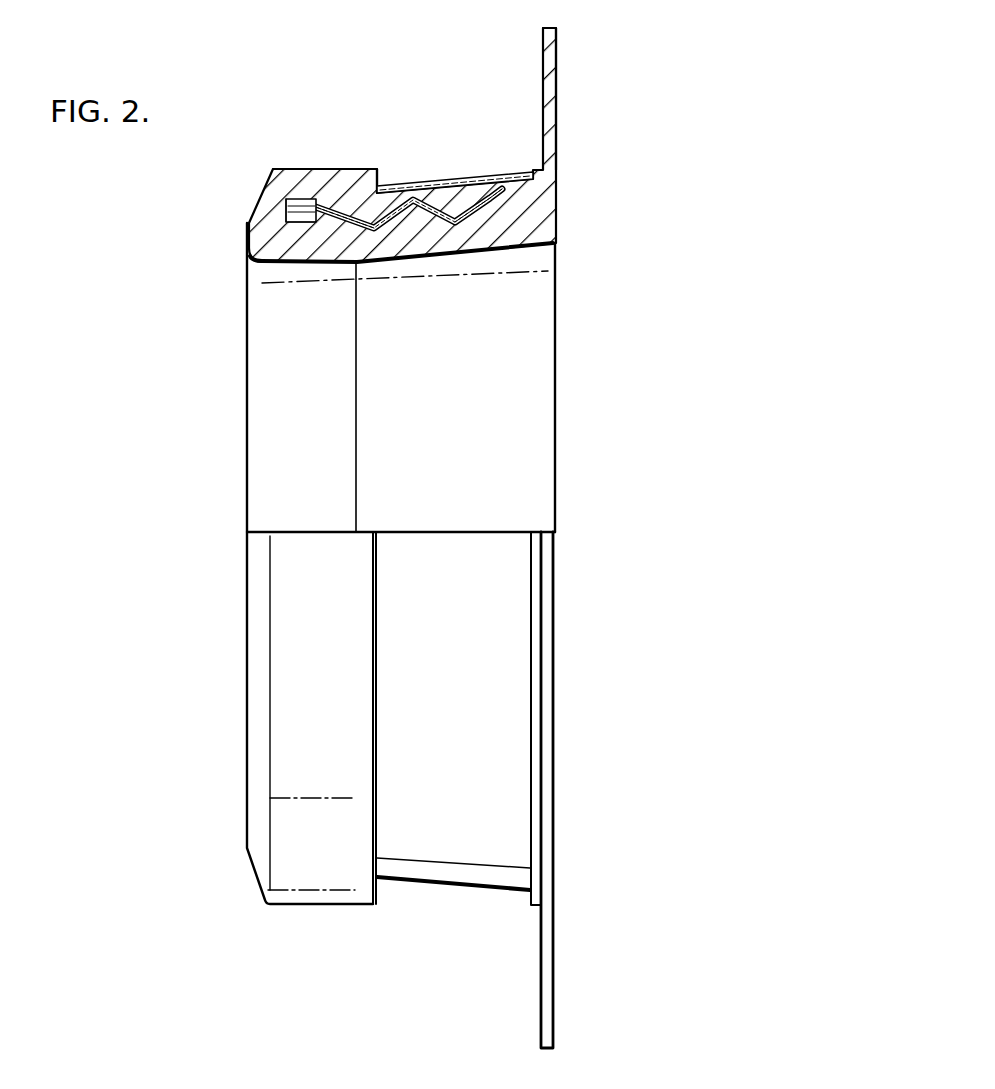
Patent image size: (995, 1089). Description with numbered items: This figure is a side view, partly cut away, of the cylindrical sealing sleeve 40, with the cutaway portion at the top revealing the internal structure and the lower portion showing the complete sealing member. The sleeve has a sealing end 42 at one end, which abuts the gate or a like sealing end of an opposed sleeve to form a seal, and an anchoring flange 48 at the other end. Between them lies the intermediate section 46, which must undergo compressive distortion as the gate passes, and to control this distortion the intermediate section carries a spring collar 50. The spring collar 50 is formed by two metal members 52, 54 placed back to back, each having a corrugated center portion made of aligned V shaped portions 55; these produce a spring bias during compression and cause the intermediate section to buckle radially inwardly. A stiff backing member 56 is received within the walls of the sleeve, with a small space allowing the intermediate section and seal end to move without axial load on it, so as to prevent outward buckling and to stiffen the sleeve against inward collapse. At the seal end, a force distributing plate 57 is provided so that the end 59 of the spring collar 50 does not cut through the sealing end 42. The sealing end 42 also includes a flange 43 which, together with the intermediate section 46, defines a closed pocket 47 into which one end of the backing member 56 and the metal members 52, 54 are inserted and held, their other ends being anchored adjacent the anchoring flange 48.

The sealing sleeve 40 is at (408, 152).
The sealing end 42 is at (247, 217).
The flange 43 is at (343, 177).
The intermediate section 46 is at (381, 252).
The closed pocket 47 is at (300, 199).
The anchoring flange 48 is at (552, 82).
The spring collar 50 is at (443, 151).
The metal member 52 is at (468, 222).
The metal member 54 is at (502, 204).
The V shaped portion 55 is at (331, 228).
The backing member 56 is at (497, 185).
The force distributing plate 57 is at (301, 223).
The end of spring collar 59 is at (287, 207).